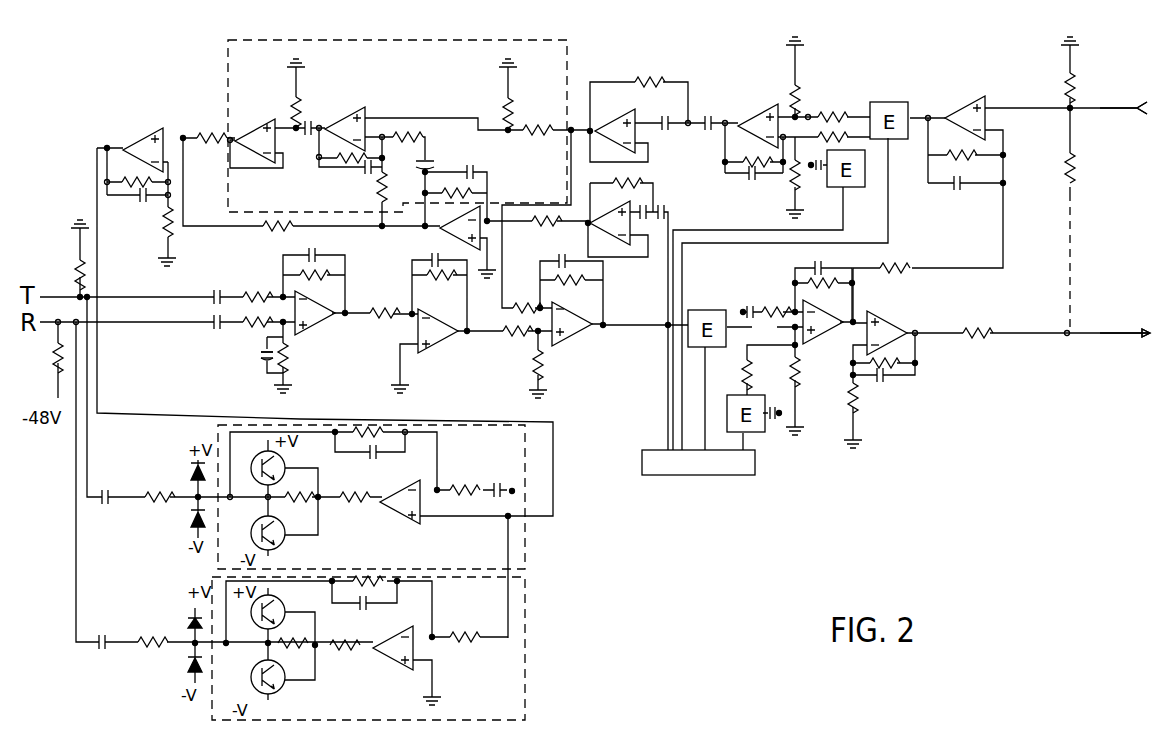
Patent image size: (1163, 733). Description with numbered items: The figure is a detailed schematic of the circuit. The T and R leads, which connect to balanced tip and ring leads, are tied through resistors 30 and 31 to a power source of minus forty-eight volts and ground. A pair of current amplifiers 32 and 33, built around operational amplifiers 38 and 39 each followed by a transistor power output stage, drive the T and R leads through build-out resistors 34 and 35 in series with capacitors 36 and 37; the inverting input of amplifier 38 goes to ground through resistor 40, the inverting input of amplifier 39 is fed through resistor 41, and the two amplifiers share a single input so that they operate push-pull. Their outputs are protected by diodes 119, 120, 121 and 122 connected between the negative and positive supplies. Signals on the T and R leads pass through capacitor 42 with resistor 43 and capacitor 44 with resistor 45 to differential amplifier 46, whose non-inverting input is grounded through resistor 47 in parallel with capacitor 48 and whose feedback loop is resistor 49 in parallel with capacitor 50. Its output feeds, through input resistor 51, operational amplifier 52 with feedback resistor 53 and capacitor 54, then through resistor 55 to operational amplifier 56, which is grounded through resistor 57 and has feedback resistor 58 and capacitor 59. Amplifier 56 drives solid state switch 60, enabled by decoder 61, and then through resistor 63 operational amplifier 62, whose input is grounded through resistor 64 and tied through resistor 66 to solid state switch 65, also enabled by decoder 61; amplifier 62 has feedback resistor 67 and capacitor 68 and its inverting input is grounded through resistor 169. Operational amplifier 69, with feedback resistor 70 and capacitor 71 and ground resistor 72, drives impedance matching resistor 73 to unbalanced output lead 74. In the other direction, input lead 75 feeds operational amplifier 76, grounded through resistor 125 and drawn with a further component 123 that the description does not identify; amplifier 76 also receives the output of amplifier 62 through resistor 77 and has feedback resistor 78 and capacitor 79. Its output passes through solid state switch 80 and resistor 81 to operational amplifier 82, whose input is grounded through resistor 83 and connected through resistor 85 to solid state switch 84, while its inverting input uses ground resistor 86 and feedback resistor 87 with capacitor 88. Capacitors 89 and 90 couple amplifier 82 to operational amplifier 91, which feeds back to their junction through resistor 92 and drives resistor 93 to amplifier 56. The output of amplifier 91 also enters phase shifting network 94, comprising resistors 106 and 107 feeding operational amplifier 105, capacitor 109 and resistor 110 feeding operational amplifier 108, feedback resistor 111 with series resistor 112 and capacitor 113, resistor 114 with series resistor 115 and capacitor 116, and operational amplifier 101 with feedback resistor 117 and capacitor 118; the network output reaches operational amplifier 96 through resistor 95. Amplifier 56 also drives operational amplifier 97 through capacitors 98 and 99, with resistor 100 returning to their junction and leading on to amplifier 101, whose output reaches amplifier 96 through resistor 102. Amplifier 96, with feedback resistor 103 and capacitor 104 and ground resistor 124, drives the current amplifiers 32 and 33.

The resistor 30 is at (77, 272).
The resistor 31 is at (56, 352).
The current amplifier 32 is at (525, 465).
The current amplifier 33 is at (525, 706).
The build-out resistor 34 is at (162, 492).
The build-out resistor 35 is at (154, 636).
The capacitor 36 is at (108, 492).
The capacitor 37 is at (105, 636).
The operational amplifier 38 is at (404, 494).
The operational amplifier 39 is at (402, 643).
The resistor 40 is at (471, 486).
The resistor 41 is at (465, 633).
The capacitor 42 is at (214, 290).
The resistor 43 is at (262, 291).
The capacitor 44 is at (214, 328).
The resistor 45 is at (255, 332).
The differential amplifier 46 is at (320, 328).
The resistor 47 is at (288, 353).
The capacitor 48 is at (263, 361).
The resistor 49 is at (317, 288).
The capacitor 50 is at (317, 254).
The input resistor 51 is at (387, 308).
The operational amplifier 52 is at (446, 343).
The resistor 53 is at (442, 293).
The capacitor 54 is at (427, 254).
The resistor 55 is at (516, 338).
The operational amplifier 56 is at (575, 342).
The resistor 57 is at (545, 375).
The resistor 58 is at (575, 286).
The capacitor 59 is at (566, 256).
The solid state switch 60 is at (708, 310).
The decoder 61 is at (755, 462).
The operational amplifier 62 is at (822, 334).
The resistor 63 is at (750, 367).
The resistor 64 is at (802, 378).
The solid state switch 65 is at (730, 395).
The resistor 66 is at (770, 404).
The resistor 67 is at (822, 288).
The capacitor 68 is at (808, 268).
The operational amplifier 69 is at (893, 326).
The resistor 70 is at (900, 358).
The capacitor 71 is at (883, 385).
The resistor 72 is at (848, 392).
The impedance matching resistor 73 is at (992, 338).
The unbalanced output lead 74 is at (1126, 336).
The input lead 75 is at (1105, 108).
The operational amplifier 76 is at (965, 103).
The resistor 77 is at (905, 268).
The resistor 78 is at (956, 153).
The capacitor 79 is at (963, 191).
The solid state switch 80 is at (895, 101).
The resistor 81 is at (838, 112).
The operational amplifier 82 is at (766, 106).
The resistor 83 is at (800, 96).
The solid state switch 84 is at (830, 190).
The resistor 85 is at (850, 140).
The resistor 86 is at (790, 182).
The resistor 87 is at (745, 158).
The capacitor 88 is at (749, 179).
The capacitor 89 is at (712, 114).
The capacitor 90 is at (680, 115).
The operational amplifier 91 is at (619, 119).
The resistor 92 is at (658, 80).
The resistor 93 is at (528, 305).
The phase shifting network 94 is at (567, 46).
The resistor 95 is at (211, 134).
The operational amplifier 96 is at (150, 131).
The operational amplifier 97 is at (620, 215).
The capacitor 98 is at (668, 210).
The capacitor 99 is at (648, 206).
The resistor 100 is at (542, 228).
The operational amplifier 101 is at (462, 221).
The resistor 102 is at (280, 231).
The resistor 103 is at (105, 181).
The capacitor 104 is at (144, 203).
The operational amplifier 105 is at (360, 104).
The resistor 106 is at (540, 124).
The resistor 107 is at (500, 110).
The operational amplifier 108 is at (262, 128).
The capacitor 109 is at (308, 121).
The resistor 110 is at (292, 100).
The resistor 111 is at (316, 157).
The resistor 112 is at (340, 165).
The capacitor 113 is at (364, 174).
The resistor 114 is at (386, 197).
The resistor 115 is at (400, 131).
The capacitor 116 is at (428, 158).
The resistor 117 is at (473, 194).
The capacitor 118 is at (470, 166).
The protection diode 119 is at (192, 521).
The protection diode 120 is at (192, 468).
The protection diode 121 is at (190, 668).
The protection diode 122 is at (190, 622).
The resistor 123 is at (1078, 172).
The resistor 124 is at (163, 228).
The resistor 125 is at (1063, 80).
The resistor 169 is at (768, 309).